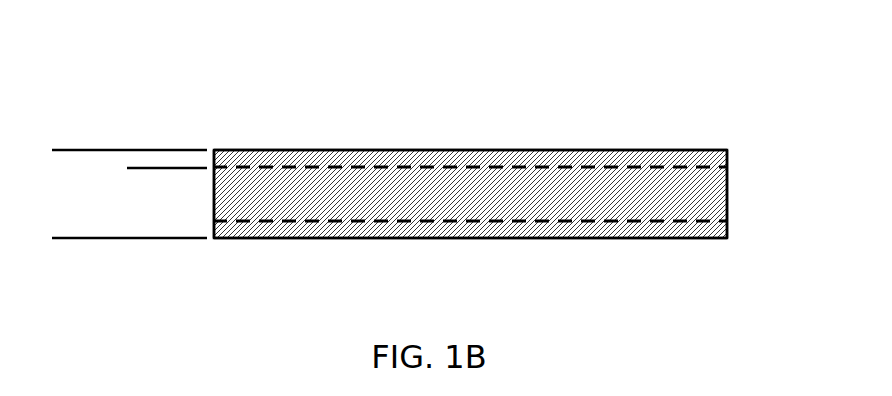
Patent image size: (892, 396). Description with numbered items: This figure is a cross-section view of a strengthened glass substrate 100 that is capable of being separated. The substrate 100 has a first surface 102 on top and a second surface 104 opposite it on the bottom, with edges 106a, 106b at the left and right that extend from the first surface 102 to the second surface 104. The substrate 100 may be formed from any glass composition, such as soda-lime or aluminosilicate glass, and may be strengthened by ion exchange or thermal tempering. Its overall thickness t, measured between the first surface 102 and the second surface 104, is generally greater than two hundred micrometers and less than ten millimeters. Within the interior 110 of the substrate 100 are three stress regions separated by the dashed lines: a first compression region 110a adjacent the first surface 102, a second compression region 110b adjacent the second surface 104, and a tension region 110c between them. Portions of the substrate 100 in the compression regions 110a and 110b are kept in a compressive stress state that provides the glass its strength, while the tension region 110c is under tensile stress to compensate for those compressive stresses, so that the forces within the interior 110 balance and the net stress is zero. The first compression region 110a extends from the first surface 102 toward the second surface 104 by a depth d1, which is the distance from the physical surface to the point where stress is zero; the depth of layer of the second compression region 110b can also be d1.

The strengthened glass substrate 100 is at (237, 52).
The first surface 102 is at (471, 142).
The second surface 104 is at (460, 246).
The edge 106a is at (206, 222).
The edge 106b is at (735, 200).
The interior 110 is at (653, 43).
The first compression region 110a is at (678, 157).
The second compression region 110b is at (627, 225).
The tension region 110c is at (572, 185).
The thickness t is at (63, 160).
The depth d1 is at (139, 115).